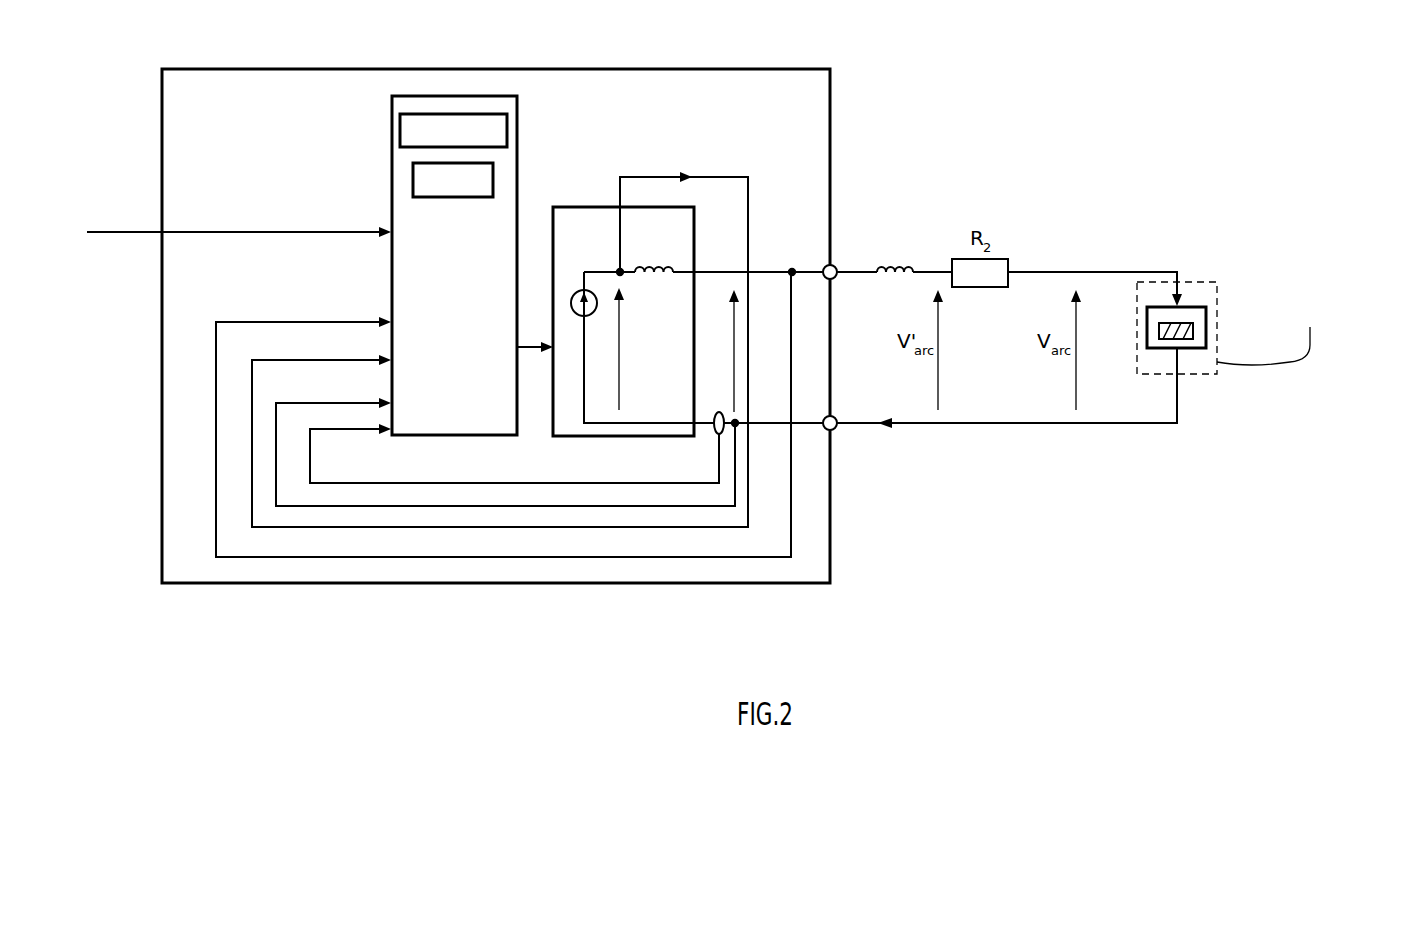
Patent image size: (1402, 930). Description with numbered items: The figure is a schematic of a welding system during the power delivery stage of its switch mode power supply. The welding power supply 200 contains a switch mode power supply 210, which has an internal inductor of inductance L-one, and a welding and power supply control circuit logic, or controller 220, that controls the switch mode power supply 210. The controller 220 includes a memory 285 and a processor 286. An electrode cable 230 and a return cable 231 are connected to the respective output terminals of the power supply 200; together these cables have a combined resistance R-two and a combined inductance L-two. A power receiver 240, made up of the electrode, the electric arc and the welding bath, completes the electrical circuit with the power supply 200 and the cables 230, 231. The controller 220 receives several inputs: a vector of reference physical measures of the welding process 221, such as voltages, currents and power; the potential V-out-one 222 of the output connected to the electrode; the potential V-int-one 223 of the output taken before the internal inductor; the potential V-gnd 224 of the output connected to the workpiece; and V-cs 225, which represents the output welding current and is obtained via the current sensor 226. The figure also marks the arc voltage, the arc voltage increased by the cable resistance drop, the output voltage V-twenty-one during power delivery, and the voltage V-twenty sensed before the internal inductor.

The power supply 200 is at (577, 69).
The switch mode power supply 210 is at (597, 207).
The welding and power supply control circuit logic 220 is at (391, 104).
The vector of reference physical measures of the welding process 221 is at (125, 232).
The V_out_1 222 is at (258, 322).
The V_int_1 223 is at (252, 407).
The V_gnd 224 is at (473, 506).
The V_cs 225 is at (326, 483).
The current sensor 226 is at (688, 452).
The electrode cable 230 is at (857, 272).
The return cable 231 is at (1026, 423).
The power receiver 240 is at (1200, 282).
The memory 285 is at (413, 183).
The processor 286 is at (507, 131).